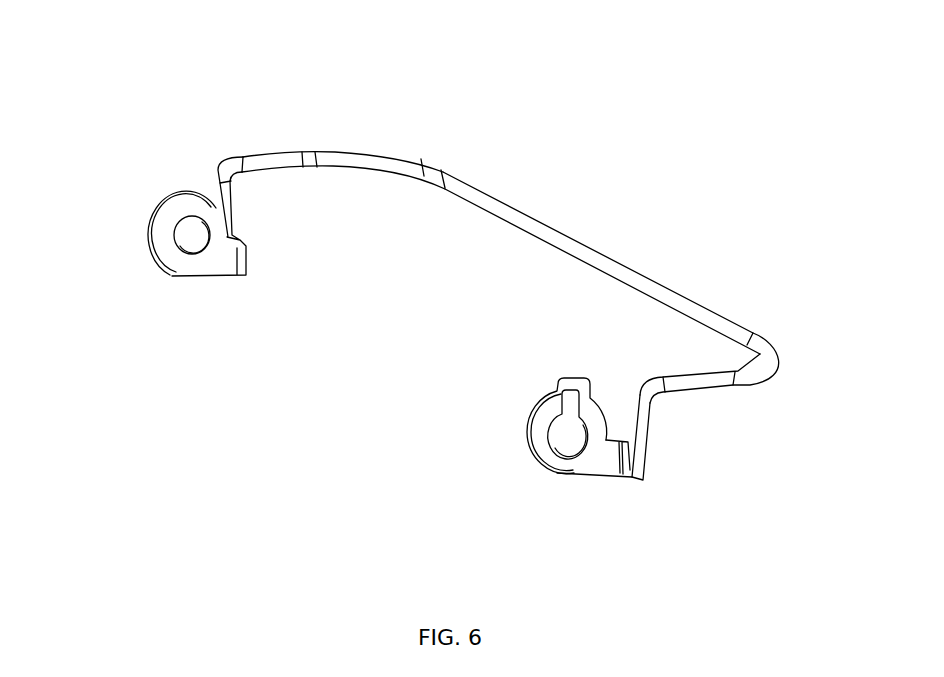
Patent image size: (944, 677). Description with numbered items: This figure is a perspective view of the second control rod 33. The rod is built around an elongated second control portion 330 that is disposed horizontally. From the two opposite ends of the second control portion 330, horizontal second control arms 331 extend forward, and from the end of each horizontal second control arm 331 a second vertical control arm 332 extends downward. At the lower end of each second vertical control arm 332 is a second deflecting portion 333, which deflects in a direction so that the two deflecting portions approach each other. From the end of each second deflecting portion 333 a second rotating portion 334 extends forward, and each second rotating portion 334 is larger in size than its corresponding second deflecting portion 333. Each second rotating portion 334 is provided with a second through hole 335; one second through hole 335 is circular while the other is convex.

The second control rod 33 is at (422, 167).
The second control portion 330 is at (588, 252).
The horizontal second control arm 331 is at (302, 155).
The second vertical control arm 332 is at (218, 183).
The second deflecting portion 333 is at (618, 470).
The second rotating portion 334 is at (183, 263).
The second through hole 335 is at (188, 232).